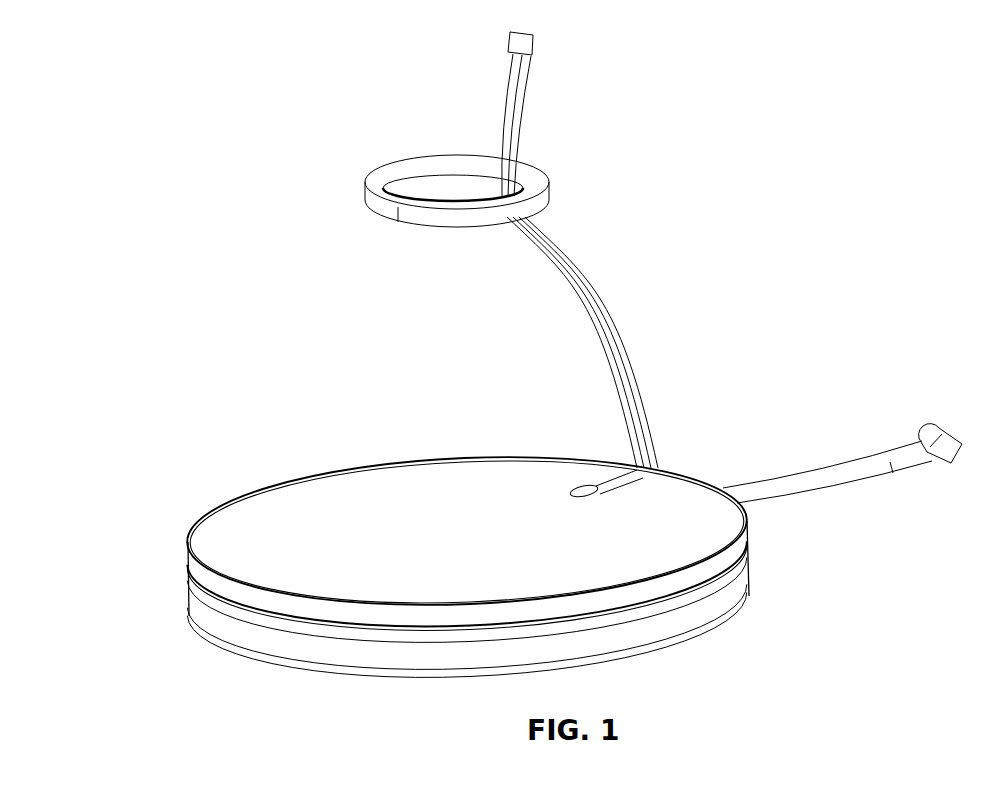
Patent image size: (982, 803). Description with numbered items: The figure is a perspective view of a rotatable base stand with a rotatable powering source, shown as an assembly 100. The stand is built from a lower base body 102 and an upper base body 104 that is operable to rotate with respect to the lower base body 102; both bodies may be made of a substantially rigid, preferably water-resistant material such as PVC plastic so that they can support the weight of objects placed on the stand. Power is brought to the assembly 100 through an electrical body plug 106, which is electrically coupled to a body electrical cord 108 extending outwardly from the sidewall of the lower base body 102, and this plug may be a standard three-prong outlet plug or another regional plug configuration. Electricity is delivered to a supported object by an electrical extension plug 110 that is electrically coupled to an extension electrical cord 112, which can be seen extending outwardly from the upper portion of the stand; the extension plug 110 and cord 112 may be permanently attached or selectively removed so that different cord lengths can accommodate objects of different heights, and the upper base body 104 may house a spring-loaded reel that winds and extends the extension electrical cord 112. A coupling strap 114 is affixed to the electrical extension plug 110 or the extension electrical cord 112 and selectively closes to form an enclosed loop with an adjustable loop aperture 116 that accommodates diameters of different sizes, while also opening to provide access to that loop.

The assembly 100 is at (226, 371).
The lower base body 102 is at (200, 616).
The upper base body 104 is at (308, 497).
The electrical body plug 106 is at (950, 435).
The body electrical cord 108 is at (794, 483).
The electrical extension plug 110 is at (532, 45).
The extension electrical cord 112 is at (590, 300).
The coupling strap 114 is at (443, 215).
The adjustable loop aperture 116 is at (412, 185).